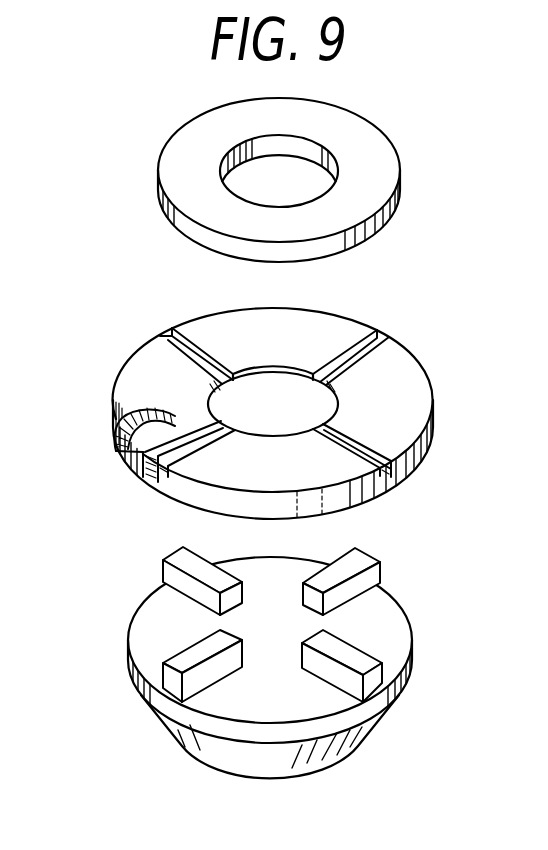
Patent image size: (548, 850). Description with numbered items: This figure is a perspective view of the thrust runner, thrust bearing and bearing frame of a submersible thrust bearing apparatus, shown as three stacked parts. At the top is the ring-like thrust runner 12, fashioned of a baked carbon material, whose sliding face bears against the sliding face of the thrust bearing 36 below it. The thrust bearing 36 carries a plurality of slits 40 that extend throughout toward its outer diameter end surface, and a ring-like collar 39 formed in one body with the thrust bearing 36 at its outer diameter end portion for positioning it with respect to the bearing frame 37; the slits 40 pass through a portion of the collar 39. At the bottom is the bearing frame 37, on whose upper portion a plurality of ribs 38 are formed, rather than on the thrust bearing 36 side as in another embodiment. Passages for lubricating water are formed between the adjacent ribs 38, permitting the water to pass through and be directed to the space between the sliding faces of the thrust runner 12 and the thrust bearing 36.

The thrust runner 12 is at (172, 167).
The thrust bearing 36 is at (252, 392).
The slits 40 is at (207, 357).
The collar 39 is at (125, 453).
The bearing frame 37 is at (229, 662).
The ribs 38 is at (180, 652).